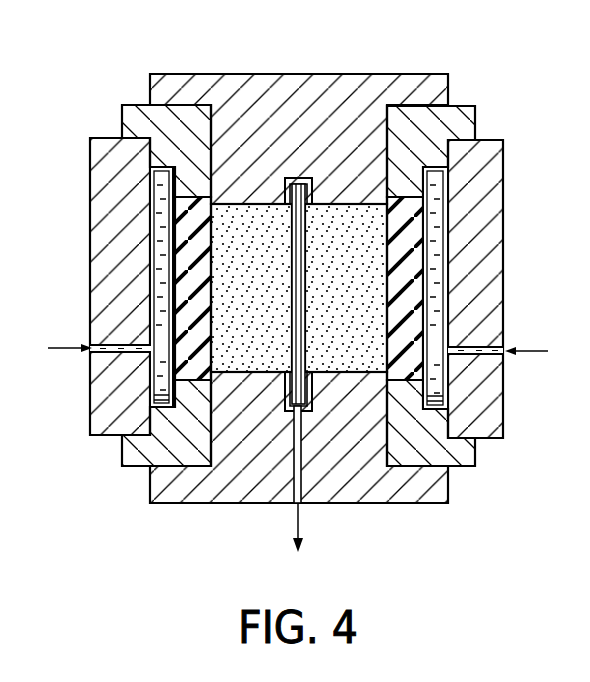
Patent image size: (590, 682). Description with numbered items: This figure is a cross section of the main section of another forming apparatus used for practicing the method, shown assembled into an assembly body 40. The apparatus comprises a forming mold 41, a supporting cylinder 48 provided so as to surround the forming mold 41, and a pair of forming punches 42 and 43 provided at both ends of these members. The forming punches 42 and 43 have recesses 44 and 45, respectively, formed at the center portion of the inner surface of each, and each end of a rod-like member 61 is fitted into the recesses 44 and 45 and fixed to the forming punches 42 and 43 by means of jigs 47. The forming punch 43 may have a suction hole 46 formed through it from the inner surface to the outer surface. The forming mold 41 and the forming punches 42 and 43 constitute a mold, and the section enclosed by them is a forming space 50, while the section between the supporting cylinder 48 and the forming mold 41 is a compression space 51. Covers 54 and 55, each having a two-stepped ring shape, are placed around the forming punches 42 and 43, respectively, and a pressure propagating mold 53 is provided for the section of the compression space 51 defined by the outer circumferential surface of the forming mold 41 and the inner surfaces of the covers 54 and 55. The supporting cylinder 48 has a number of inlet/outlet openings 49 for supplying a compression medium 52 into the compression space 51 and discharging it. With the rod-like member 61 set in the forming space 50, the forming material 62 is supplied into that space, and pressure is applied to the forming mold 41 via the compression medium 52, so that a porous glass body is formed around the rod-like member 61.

The assembly body 40 is at (466, 85).
The forming mold 41 is at (415, 211).
The forming punch 42 is at (264, 97).
The forming punch 43 is at (176, 492).
The recess 44 is at (308, 178).
The recess 45 is at (308, 410).
The suction hole 46 is at (293, 458).
The jig 47 is at (283, 180).
The supporting cylinder 48 is at (90, 230).
The inlet/outlet openings 49 is at (117, 343).
The forming space 50 is at (392, 250).
The compression space 51 is at (160, 271).
The compression medium 52 is at (153, 198).
The pressure propagating mold 53 is at (165, 375).
The cover 54 is at (130, 117).
The cover 55 is at (130, 457).
The rod-like member 61 is at (278, 245).
The forming material 62 is at (353, 215).